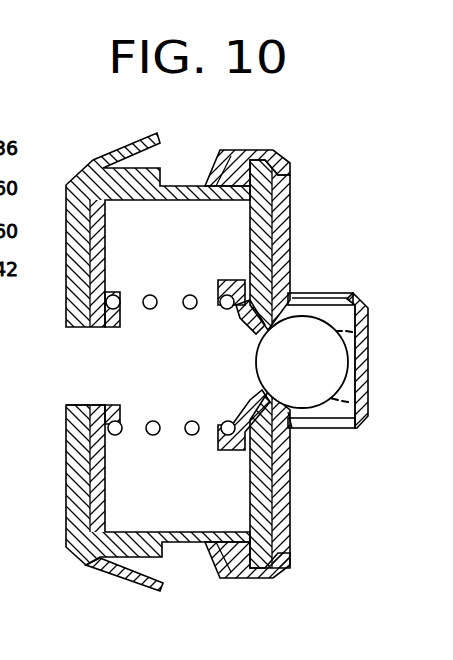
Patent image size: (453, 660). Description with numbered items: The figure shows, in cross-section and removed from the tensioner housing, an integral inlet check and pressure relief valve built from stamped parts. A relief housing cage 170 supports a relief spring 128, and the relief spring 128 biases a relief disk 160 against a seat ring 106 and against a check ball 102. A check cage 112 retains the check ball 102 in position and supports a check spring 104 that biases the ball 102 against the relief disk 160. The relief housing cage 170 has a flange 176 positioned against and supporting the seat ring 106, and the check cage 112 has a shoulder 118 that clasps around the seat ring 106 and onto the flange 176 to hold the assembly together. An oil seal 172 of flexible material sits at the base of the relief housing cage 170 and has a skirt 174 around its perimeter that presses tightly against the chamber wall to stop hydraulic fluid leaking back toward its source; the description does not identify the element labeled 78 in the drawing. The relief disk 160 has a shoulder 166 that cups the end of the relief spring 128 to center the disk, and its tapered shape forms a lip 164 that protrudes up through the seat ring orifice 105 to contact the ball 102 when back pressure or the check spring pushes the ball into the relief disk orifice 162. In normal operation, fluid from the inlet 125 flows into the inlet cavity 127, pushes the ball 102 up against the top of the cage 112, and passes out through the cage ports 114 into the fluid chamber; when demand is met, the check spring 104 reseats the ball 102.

The check ball 102 is at (262, 378).
The check spring 104 is at (342, 429).
The seat ring orifice 105 is at (294, 440).
The seat ring 106 is at (272, 222).
The check cage 112 is at (293, 186).
The cage ports 114 is at (320, 430).
The shoulder 118 is at (250, 150).
The inlet 125 is at (76, 400).
The inlet cavity 127 is at (217, 364).
The relief spring 128 is at (118, 410).
The relief disk 160 is at (283, 271).
The relief disk orifice 162 is at (263, 352).
The lip 164 is at (291, 293).
The shoulder 166 is at (225, 285).
The relief housing cage 170 is at (228, 565).
The oil seal 172 is at (79, 478).
The skirt 174 is at (93, 561).
The flange 176 is at (226, 182).
The upper roller bracket 78 is at (102, 449).